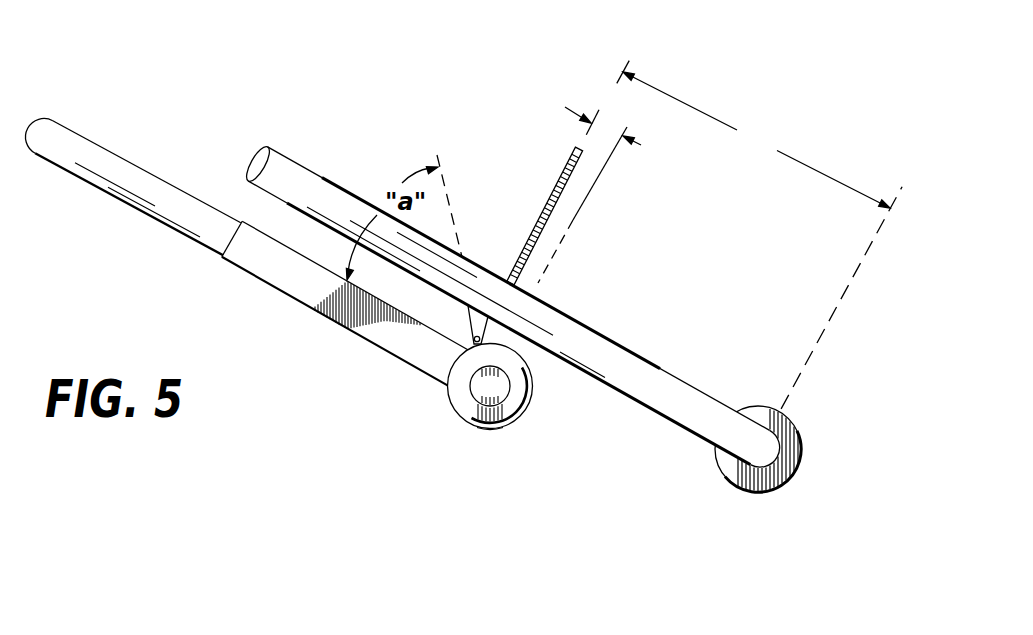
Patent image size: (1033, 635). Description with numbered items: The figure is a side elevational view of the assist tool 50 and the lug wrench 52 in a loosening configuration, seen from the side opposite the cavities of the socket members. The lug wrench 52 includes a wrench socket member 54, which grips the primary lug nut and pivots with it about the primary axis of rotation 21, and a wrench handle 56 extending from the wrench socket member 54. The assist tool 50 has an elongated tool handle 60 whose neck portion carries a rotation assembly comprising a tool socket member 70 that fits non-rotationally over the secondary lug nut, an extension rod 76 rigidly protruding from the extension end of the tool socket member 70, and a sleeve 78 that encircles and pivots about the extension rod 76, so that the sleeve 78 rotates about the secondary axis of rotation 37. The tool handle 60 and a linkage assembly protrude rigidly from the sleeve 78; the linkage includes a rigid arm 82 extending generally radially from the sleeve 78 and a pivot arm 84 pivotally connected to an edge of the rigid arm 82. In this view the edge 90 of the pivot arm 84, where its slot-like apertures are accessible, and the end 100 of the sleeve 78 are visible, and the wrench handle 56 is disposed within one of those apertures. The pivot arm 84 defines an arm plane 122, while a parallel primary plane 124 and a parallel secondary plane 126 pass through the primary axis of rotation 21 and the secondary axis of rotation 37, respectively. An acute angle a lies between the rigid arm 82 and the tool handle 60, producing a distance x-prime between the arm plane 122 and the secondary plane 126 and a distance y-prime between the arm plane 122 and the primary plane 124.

The primary axis of rotation 21 is at (753, 450).
The secondary axis of rotation 37 is at (490, 388).
The assist tool 50 is at (254, 299).
The lug wrench 52 is at (661, 426).
The wrench socket member 54 is at (790, 483).
The wrench handle 56 is at (250, 167).
The tool handle 60 is at (117, 208).
The tool socket member 70 is at (487, 437).
The extension rod 76 is at (478, 384).
The sleeve 78 is at (477, 406).
The rigid arm 82 is at (475, 342).
The pivot arm 84 is at (531, 217).
The edge 90 is at (578, 152).
The end of the sleeve 100 is at (520, 383).
The arm plane 122 is at (620, 65).
The primary plane 124 is at (840, 303).
The secondary plane 126 is at (560, 252).